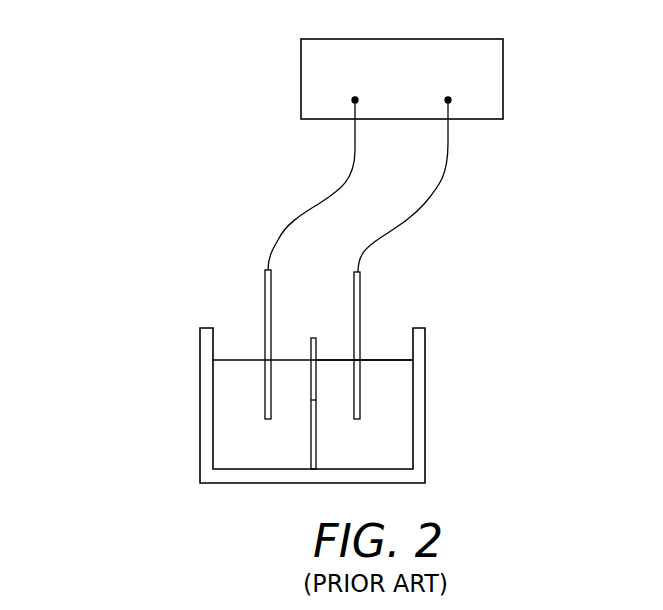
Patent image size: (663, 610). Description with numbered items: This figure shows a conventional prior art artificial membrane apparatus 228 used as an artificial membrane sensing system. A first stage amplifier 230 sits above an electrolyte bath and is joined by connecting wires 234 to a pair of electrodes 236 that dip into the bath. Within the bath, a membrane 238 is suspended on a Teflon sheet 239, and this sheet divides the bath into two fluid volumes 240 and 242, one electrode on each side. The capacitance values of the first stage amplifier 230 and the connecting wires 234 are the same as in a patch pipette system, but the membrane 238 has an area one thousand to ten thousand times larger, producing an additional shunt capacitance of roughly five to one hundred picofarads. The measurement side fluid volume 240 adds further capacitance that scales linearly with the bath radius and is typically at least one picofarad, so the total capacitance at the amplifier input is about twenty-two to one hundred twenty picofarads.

The artificial membrane apparatus 228 is at (148, 107).
The first stage amplifier 230 is at (402, 63).
The connecting wires 234 is at (430, 198).
The electrodes 236 is at (354, 289).
The membrane 238 is at (310, 390).
The Teflon sheet 239 is at (308, 435).
The fluid volume 240 is at (380, 358).
The fluid volume 242 is at (240, 358).